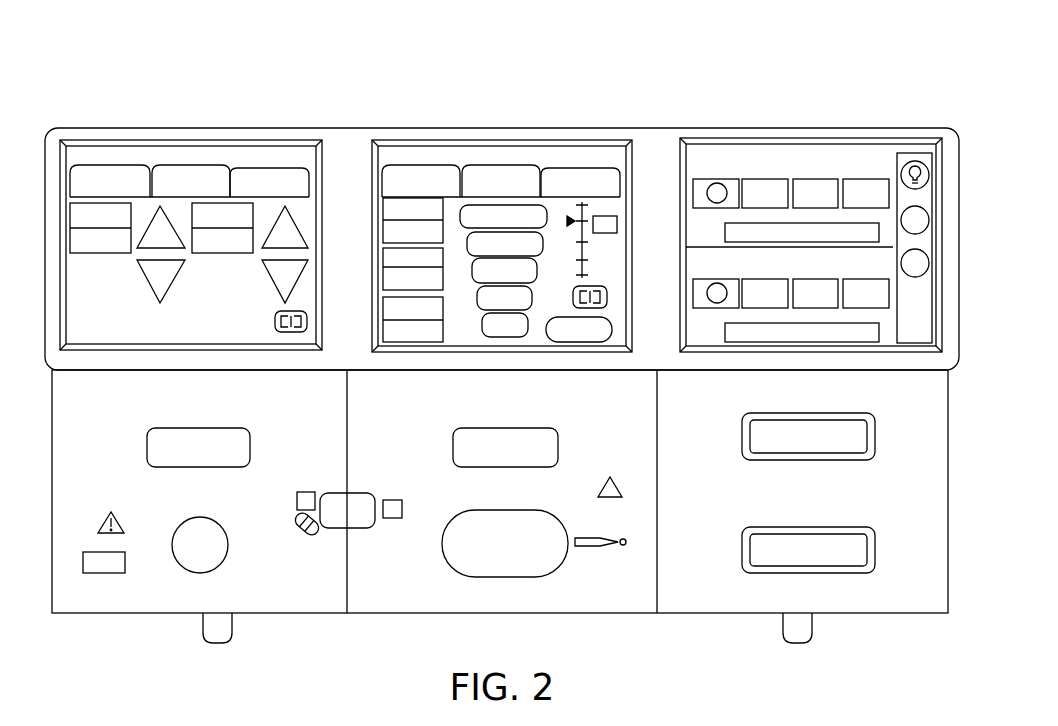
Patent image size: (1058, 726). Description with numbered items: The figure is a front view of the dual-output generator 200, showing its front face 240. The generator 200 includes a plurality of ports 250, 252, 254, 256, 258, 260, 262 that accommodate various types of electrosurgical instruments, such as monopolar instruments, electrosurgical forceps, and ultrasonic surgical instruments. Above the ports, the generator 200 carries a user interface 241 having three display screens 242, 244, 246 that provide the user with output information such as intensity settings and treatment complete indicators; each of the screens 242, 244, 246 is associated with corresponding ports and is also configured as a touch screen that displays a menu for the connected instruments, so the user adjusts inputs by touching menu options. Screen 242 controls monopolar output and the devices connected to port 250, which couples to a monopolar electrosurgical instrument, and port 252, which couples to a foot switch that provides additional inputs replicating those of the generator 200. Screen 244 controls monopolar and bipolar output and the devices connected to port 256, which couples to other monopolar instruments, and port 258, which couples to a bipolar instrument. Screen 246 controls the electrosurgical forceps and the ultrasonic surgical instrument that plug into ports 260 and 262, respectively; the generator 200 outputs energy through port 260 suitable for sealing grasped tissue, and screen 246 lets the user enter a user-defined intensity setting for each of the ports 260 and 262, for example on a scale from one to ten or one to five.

The generator 200 is at (840, 91).
The front face 240 is at (367, 128).
The user interface 241 is at (521, 104).
The display screen 242 is at (322, 151).
The display screen 244 is at (633, 197).
The display screen 246 is at (680, 328).
The port 250 is at (208, 428).
The port 252 is at (228, 546).
The port 254 is at (340, 492).
The port 256 is at (530, 428).
The port 258 is at (563, 567).
The port 260 is at (877, 433).
The port 262 is at (877, 546).